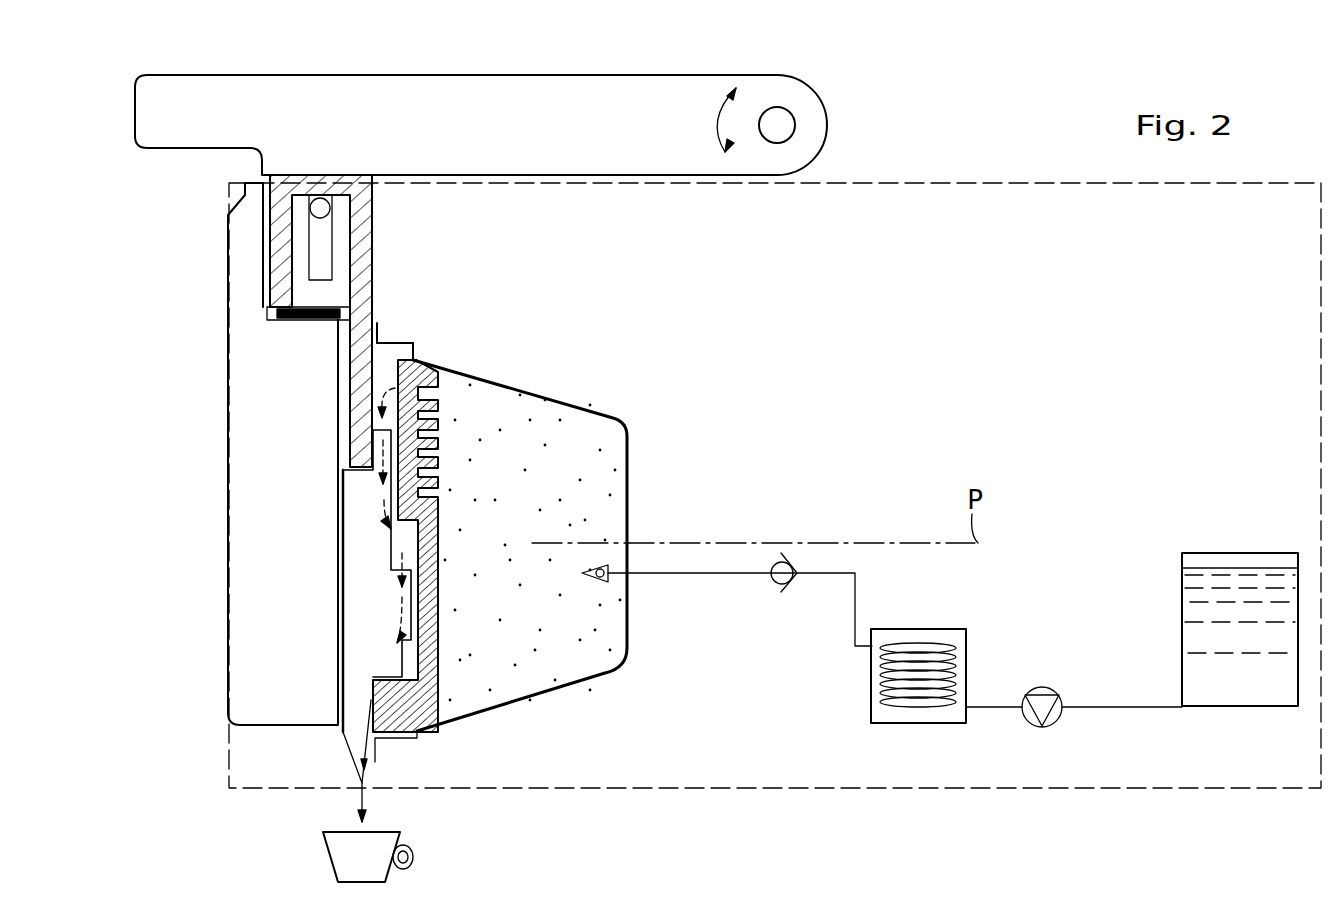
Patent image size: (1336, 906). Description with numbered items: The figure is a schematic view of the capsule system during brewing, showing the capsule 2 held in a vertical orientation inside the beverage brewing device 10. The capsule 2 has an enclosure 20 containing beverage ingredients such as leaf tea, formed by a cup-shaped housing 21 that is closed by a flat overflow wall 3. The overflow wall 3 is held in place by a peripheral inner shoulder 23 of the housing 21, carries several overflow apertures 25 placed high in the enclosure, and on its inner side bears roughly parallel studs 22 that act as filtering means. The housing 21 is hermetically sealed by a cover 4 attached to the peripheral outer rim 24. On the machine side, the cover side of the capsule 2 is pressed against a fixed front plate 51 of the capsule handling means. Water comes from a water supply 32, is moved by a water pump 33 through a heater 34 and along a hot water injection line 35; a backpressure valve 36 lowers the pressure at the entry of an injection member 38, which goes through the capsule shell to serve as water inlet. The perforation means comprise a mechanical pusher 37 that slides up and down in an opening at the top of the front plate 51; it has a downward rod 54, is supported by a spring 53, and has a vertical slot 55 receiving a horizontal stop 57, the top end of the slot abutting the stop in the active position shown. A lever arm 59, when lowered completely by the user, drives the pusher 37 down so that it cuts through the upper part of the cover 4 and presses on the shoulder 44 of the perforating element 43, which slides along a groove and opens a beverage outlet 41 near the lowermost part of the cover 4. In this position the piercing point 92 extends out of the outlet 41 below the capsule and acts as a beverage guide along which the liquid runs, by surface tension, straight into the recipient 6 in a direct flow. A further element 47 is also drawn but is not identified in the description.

The capsule 2 is at (600, 443).
The overflow wall 3 is at (397, 368).
The cover 4 is at (340, 743).
The recipient 6 is at (377, 868).
The beverage brewing device 10 is at (1008, 180).
The enclosure 20 is at (575, 665).
The cup-shaped housing 21 is at (537, 695).
The studs 22 is at (438, 480).
The peripheral inner shoulder 23 is at (418, 734).
The peripheral outer rim 24 is at (377, 335).
The overflow apertures 25 is at (438, 392).
The water supply 32 is at (1265, 663).
The water pump 33 is at (1042, 728).
The heater 34 is at (930, 722).
The hot water injection line 35 is at (855, 590).
The backpressure valve 36 is at (780, 585).
The mechanical pusher 37 is at (275, 282).
The injection member 38 is at (600, 580).
The beverage outlet 41 is at (342, 750).
The perforating element 43 is at (367, 563).
The shoulder 44 is at (365, 472).
The filter plate 47 is at (437, 660).
The fixed front plate 51 is at (272, 423).
The spring 53 is at (300, 318).
The rod 54 is at (377, 327).
The vertical slot 55 is at (320, 243).
The horizontal stop 57 is at (313, 212).
The lever arm 59 is at (207, 128).
The piercing point 92 is at (357, 750).